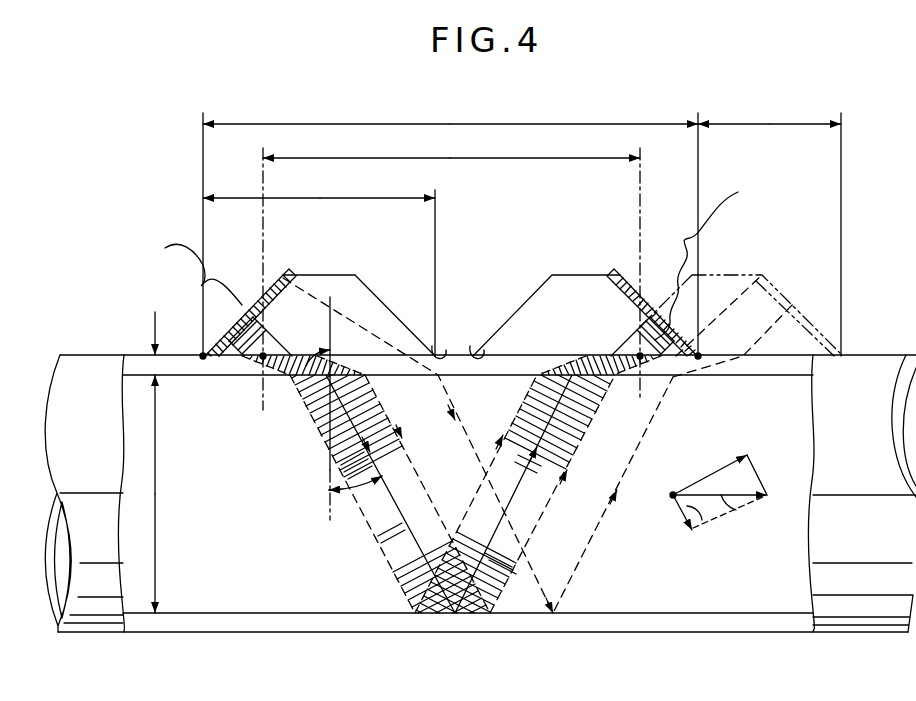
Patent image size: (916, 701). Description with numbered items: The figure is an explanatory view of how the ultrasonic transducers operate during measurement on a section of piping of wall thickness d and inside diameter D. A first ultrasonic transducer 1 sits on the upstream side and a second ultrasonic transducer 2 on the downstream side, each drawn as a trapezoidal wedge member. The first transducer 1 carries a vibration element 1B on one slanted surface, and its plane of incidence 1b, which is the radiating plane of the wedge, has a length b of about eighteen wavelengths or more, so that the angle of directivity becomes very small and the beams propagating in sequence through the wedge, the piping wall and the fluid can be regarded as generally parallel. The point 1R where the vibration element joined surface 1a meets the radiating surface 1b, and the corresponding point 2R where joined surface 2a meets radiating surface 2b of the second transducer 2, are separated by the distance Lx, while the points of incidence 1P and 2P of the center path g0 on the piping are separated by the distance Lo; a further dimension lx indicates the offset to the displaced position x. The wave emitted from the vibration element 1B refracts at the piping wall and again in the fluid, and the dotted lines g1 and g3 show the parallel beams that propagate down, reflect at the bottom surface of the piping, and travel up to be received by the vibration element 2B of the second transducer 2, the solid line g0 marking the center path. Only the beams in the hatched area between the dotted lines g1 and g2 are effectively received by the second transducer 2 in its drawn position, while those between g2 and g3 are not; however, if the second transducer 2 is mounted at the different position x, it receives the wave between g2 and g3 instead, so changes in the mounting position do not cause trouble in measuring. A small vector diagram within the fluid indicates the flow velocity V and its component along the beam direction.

The first ultrasonic transducer 1 is at (376, 295).
The vibration element joined surface 1a is at (283, 272).
The vibration element 1B is at (262, 293).
The plane of incidence 1b is at (440, 346).
The point of intersection 1R is at (203, 358).
The point of incidence 1P is at (263, 378).
The second ultrasonic transducer 2 is at (534, 293).
The vibration element joined surface 2a is at (620, 273).
The vibration element 2B is at (648, 305).
The ultrasonic wave radiating surface 2b is at (478, 346).
The point of incidence 2P is at (640, 378).
The point of intersection 2R is at (713, 350).
The different position x is at (748, 275).
The center path g0 is at (388, 488).
The dotted line g1 is at (318, 427).
The dotted line g2 is at (400, 421).
The dotted line g3 is at (452, 401).
The distance between points of intersection Lx is at (478, 124).
The distance between points of incidence Lo is at (480, 158).
The transducer displacement lx is at (762, 124).
The length of plane of incidence b is at (320, 198).
The wall thickness d is at (150, 352).
The inside diameter D is at (155, 483).
The flow velocity vector V is at (753, 475).